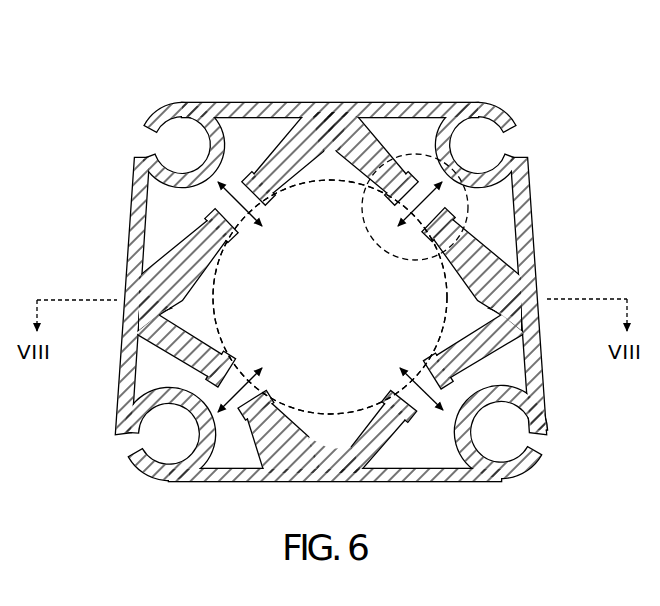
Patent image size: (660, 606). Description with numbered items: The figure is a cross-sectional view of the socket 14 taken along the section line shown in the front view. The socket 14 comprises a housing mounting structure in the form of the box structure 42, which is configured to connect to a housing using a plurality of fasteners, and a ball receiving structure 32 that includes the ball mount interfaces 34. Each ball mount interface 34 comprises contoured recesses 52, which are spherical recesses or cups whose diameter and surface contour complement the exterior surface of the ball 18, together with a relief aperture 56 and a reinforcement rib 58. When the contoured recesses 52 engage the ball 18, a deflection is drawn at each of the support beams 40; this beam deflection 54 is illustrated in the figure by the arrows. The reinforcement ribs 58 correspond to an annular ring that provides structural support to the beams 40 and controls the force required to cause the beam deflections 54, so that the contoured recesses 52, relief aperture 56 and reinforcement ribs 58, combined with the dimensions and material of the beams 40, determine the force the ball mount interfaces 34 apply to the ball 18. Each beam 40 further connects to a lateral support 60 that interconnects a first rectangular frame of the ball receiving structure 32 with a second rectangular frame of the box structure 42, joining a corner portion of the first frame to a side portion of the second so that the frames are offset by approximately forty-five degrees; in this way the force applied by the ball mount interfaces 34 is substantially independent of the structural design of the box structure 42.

The socket 14 is at (330, 270).
The ball 18 is at (335, 163).
The ball receiving structure 32 is at (330, 217).
The ball mount interface 34 is at (414, 153).
The support beam 40 is at (152, 211).
The box structure 42 is at (159, 96).
The contoured recess 52 is at (257, 168).
The beam deflection 54 is at (216, 212).
The relief aperture 56 is at (250, 382).
The reinforcement rib 58 is at (220, 157).
The lateral support 60 is at (300, 114).